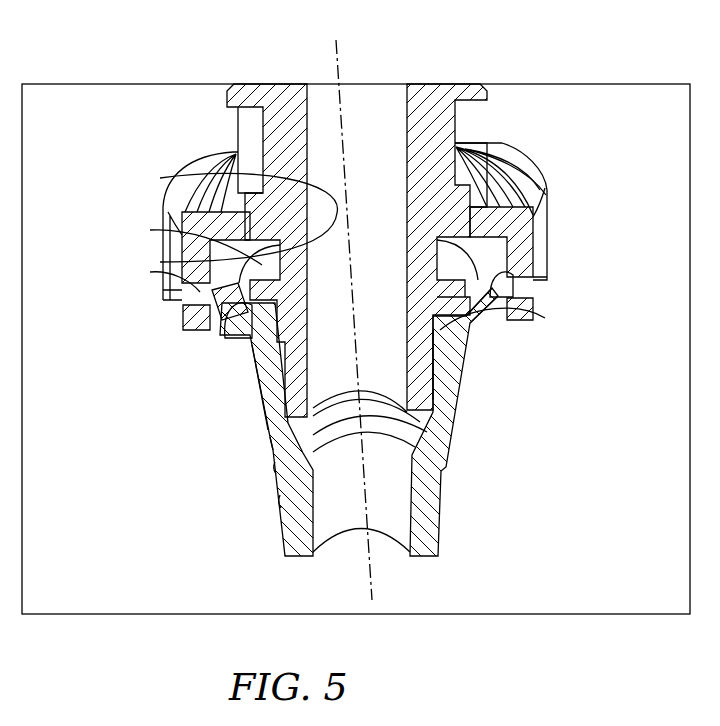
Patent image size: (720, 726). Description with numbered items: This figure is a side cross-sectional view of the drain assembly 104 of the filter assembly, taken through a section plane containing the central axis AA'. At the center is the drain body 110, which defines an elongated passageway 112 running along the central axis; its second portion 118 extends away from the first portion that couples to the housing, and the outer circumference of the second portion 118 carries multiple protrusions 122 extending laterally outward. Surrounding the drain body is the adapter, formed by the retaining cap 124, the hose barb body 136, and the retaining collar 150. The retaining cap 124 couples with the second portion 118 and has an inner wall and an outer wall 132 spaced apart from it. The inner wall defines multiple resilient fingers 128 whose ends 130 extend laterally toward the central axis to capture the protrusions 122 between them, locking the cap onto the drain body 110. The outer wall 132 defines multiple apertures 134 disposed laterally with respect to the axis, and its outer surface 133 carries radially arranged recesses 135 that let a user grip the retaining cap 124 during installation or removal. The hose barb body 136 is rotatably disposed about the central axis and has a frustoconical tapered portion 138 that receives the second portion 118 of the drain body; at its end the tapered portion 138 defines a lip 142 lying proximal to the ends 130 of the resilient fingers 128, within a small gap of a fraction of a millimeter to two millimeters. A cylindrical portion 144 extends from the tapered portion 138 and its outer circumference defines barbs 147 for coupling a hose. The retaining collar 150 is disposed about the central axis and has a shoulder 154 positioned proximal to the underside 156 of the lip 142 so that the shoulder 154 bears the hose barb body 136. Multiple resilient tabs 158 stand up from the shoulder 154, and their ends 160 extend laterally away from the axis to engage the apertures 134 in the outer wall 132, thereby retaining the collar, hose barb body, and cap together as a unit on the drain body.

The drain assembly 104 is at (518, 100).
The drain body 110 is at (544, 172).
The elongated passageway 112 is at (460, 132).
The second portion 118 is at (480, 330).
The protrusions 122 is at (232, 335).
The retaining cap 124 is at (520, 188).
The resilient fingers 128 is at (200, 262).
The ends 130 is at (300, 186).
The outer wall 132 is at (215, 283).
The outer surface 133 is at (535, 205).
The apertures 134 is at (185, 297).
The recesses 135 is at (163, 232).
The hose barb body 136 is at (262, 410).
The tapered portion 138 is at (268, 440).
The lip 142 is at (540, 318).
The cylindrical portion 144 is at (275, 465).
The barbs 147 is at (280, 500).
The retaining collar 150 is at (500, 340).
The shoulder 154 is at (483, 330).
The underside 156 is at (470, 330).
The resilient tabs 158 is at (218, 340).
The ends 160 is at (535, 307).